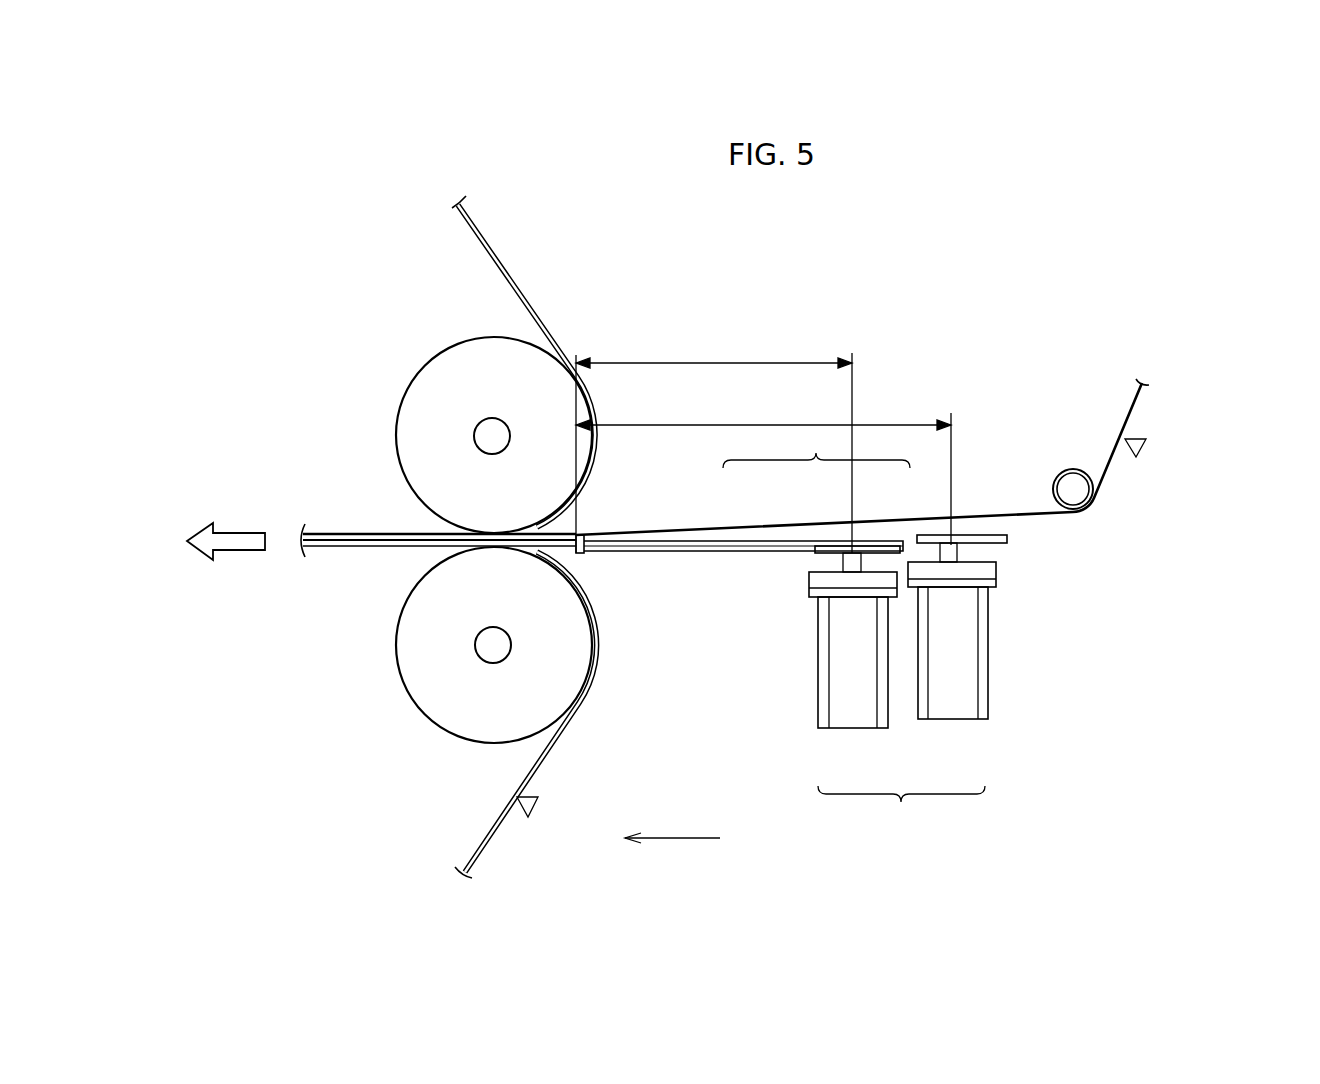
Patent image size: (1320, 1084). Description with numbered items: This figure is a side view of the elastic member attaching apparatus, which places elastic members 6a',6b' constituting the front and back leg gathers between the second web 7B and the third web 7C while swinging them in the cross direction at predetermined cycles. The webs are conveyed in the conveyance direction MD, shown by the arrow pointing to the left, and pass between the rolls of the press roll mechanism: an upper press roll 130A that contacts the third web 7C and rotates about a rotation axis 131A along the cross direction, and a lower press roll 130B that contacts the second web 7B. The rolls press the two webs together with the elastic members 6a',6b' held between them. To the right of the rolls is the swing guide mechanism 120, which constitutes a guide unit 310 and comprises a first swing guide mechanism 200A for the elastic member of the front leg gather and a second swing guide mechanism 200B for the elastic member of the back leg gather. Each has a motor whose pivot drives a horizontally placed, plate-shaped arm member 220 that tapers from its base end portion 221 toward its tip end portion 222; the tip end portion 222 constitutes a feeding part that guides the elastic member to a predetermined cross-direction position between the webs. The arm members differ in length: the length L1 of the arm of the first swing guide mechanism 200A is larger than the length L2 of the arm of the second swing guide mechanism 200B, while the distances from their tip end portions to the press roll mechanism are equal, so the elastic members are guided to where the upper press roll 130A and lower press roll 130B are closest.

The third web 7C is at (528, 299).
The second web 7B is at (540, 762).
The upper press roll 130A is at (413, 401).
The lower press roll 130B is at (418, 683).
The rotation axis 131A is at (487, 437).
The elastic members 6a',6b' is at (1145, 457).
The swing guide mechanism 120 is at (1107, 562).
The arm member 220 is at (708, 540).
The base end portion 221 is at (833, 545).
The tip end portion 222 is at (581, 553).
The first swing guide mechanism 200A is at (824, 670).
The second swing guide mechanism 200B is at (978, 665).
The guide unit 310 is at (816, 449).
The length of the arm member of the first swing guide mechanism L1 is at (714, 352).
The length of the arm member of the second swing guide mechanism L2 is at (763, 414).
The conveyance direction MD is at (672, 827).